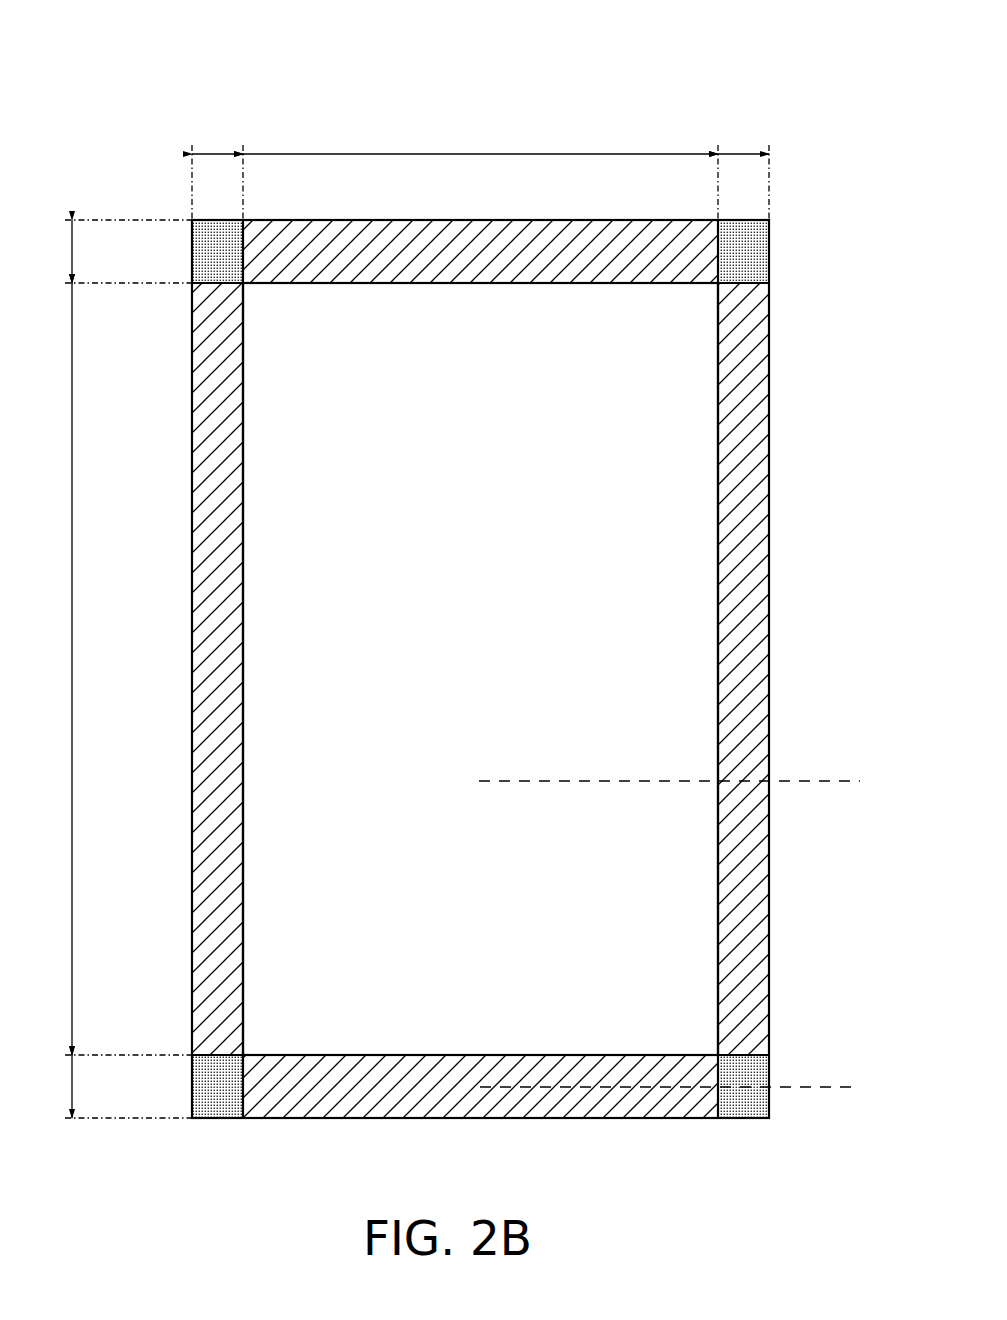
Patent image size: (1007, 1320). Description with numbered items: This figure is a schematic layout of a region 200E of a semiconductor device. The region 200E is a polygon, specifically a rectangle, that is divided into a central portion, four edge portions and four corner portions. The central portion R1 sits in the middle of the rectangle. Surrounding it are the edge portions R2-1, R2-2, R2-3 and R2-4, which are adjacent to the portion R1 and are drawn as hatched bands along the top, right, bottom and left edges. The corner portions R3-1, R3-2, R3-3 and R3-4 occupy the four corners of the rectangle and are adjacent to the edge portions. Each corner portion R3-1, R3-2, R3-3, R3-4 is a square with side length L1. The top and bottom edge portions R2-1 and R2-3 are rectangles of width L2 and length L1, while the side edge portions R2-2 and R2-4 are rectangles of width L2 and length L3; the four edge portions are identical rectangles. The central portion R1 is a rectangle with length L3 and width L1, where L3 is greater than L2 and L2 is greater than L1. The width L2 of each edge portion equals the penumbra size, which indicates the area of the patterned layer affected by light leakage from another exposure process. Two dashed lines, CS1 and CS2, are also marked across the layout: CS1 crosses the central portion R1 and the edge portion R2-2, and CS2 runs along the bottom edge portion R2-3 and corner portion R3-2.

The region 200E is at (148, 88).
The portion R1 is at (504, 686).
The portion R2-1 is at (517, 271).
The portion R2-2 is at (763, 483).
The portion R2-3 is at (417, 1102).
The portion R2-4 is at (203, 481).
The portion R3-1 is at (762, 252).
The portion R3-2 is at (745, 1108).
The portion R3-3 is at (219, 1108).
The portion R3-4 is at (203, 254).
The first cross-section line CS1 is at (669, 766).
The second cross-section line CS2 is at (670, 1073).
The length L1 is at (480, 137).
The width L2 is at (398, 619).
The length L3 is at (49, 669).